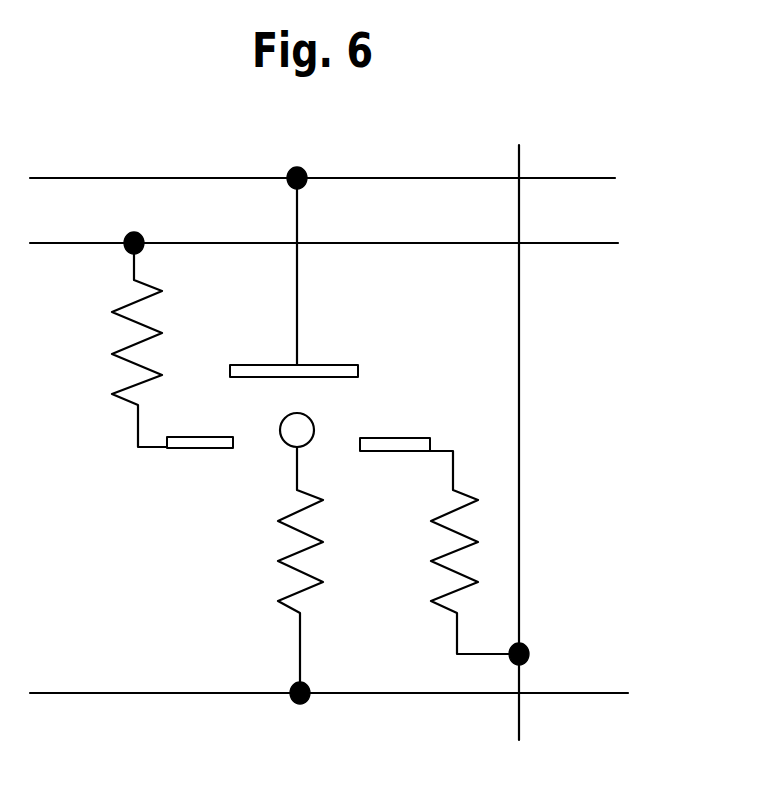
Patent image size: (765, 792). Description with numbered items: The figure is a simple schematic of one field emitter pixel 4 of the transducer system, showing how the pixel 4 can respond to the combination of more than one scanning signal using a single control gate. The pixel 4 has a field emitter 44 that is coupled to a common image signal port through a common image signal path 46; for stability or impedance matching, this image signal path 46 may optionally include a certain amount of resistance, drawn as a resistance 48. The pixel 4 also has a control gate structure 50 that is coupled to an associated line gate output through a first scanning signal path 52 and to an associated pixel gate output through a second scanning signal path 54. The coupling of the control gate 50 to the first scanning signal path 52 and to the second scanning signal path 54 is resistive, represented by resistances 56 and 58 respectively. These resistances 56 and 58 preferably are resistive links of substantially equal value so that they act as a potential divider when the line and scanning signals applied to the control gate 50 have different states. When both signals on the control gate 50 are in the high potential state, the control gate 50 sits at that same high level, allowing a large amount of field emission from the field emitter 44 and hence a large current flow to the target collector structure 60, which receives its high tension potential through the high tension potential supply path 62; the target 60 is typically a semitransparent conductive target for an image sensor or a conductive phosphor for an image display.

The pixel 4 is at (576, 156).
The field emitter 44 is at (282, 442).
The common image signal path 46 is at (537, 695).
The resistance 48 is at (287, 527).
The control gate structure 50 is at (383, 438).
The first scanning signal path 52 is at (107, 247).
The second scanning signal path 54 is at (519, 407).
The resistance 56 is at (143, 323).
The resistance 58 is at (452, 527).
The target collector structure 60 is at (335, 365).
The high tension potential supply path 62 is at (123, 178).